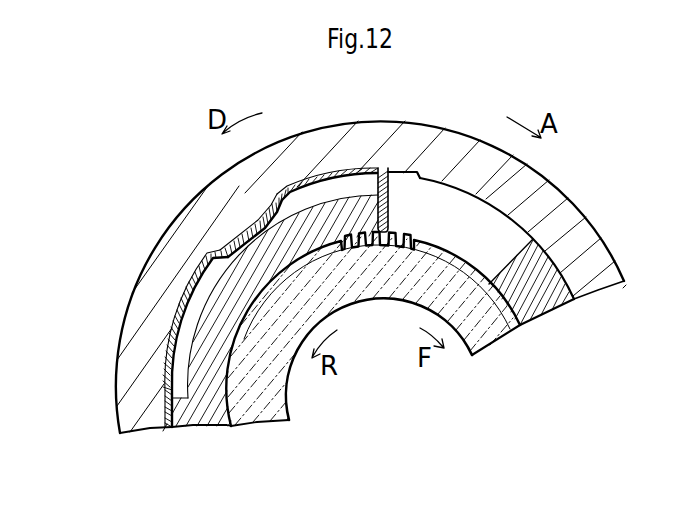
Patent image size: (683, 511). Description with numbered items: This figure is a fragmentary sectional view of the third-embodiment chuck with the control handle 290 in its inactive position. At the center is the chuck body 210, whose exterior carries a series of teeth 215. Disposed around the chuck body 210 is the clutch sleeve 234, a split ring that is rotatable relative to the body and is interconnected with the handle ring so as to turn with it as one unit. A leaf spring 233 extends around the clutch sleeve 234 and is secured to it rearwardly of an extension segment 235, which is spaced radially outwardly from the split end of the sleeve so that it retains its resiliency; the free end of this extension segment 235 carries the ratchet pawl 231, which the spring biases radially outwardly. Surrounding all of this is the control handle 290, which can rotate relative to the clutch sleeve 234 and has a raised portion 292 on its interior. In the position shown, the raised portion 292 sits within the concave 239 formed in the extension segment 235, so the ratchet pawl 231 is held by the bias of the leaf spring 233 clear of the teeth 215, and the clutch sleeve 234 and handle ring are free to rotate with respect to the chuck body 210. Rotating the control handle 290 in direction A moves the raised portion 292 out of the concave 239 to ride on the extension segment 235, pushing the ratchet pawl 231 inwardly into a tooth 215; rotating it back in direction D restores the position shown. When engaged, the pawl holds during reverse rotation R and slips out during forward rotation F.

The chuck body 210 is at (483, 322).
The teeth 215 is at (368, 243).
The ratchet pawl 231 is at (389, 170).
The leaf spring 233 is at (165, 378).
The clutch sleeve 234 is at (210, 388).
The extension segment 235 is at (317, 175).
The concave 239 is at (247, 232).
The control handle 290 is at (378, 120).
The raised portion 292 is at (257, 215).